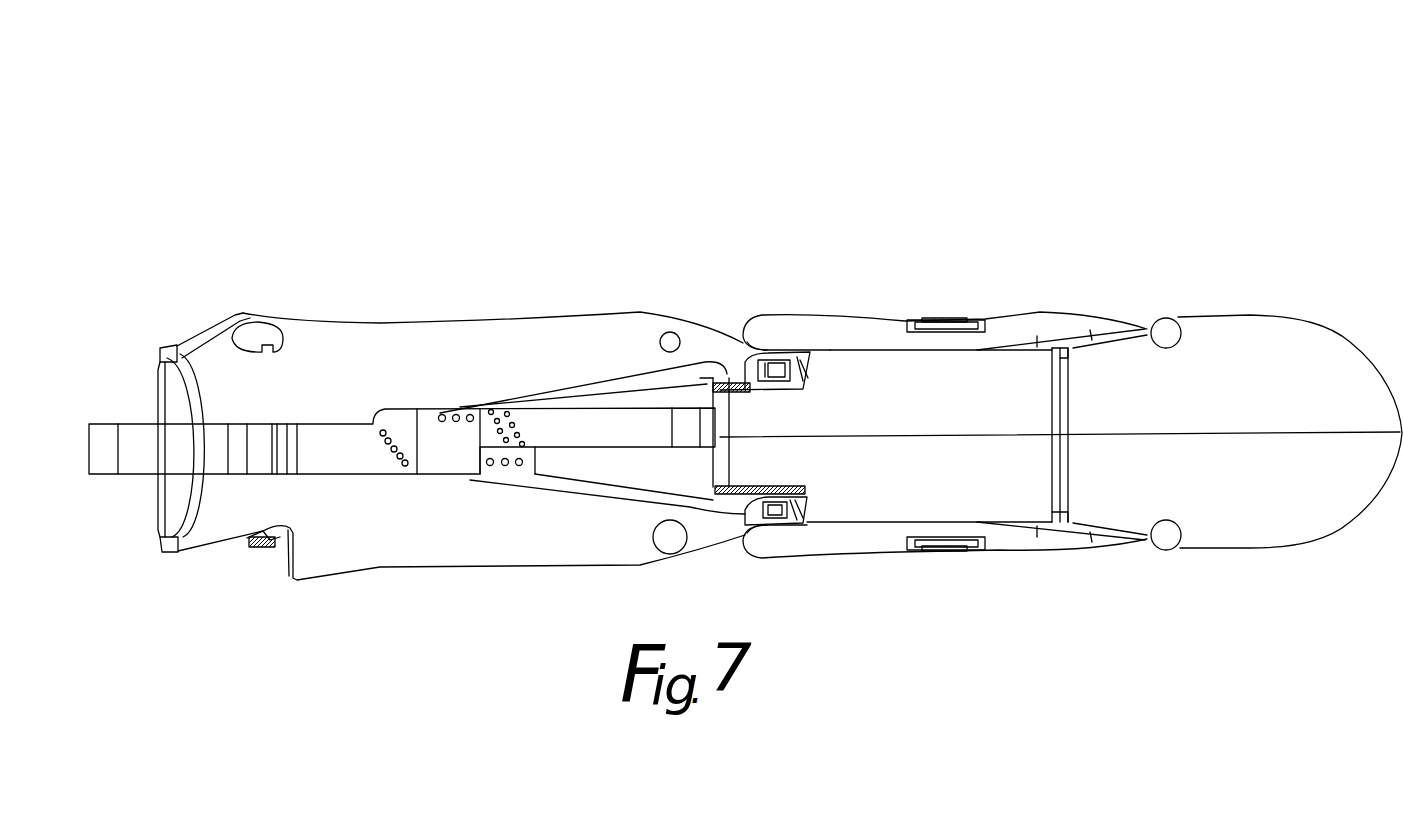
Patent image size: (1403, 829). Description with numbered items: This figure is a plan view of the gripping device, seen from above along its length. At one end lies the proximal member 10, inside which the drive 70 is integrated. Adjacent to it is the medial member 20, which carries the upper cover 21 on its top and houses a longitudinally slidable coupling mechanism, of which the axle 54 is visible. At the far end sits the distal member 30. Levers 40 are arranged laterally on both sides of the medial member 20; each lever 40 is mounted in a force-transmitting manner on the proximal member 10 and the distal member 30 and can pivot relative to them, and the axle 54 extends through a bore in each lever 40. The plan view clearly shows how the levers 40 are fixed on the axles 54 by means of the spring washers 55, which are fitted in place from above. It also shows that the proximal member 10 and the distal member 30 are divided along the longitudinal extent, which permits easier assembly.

The proximal member 10 is at (410, 340).
The medial member 20 is at (902, 142).
The upper cover 21 is at (977, 387).
The distal member 30 is at (1245, 332).
The lever 40 is at (840, 326).
The axle 54 is at (942, 322).
The spring washer 55 is at (911, 321).
The drive 70 is at (443, 436).